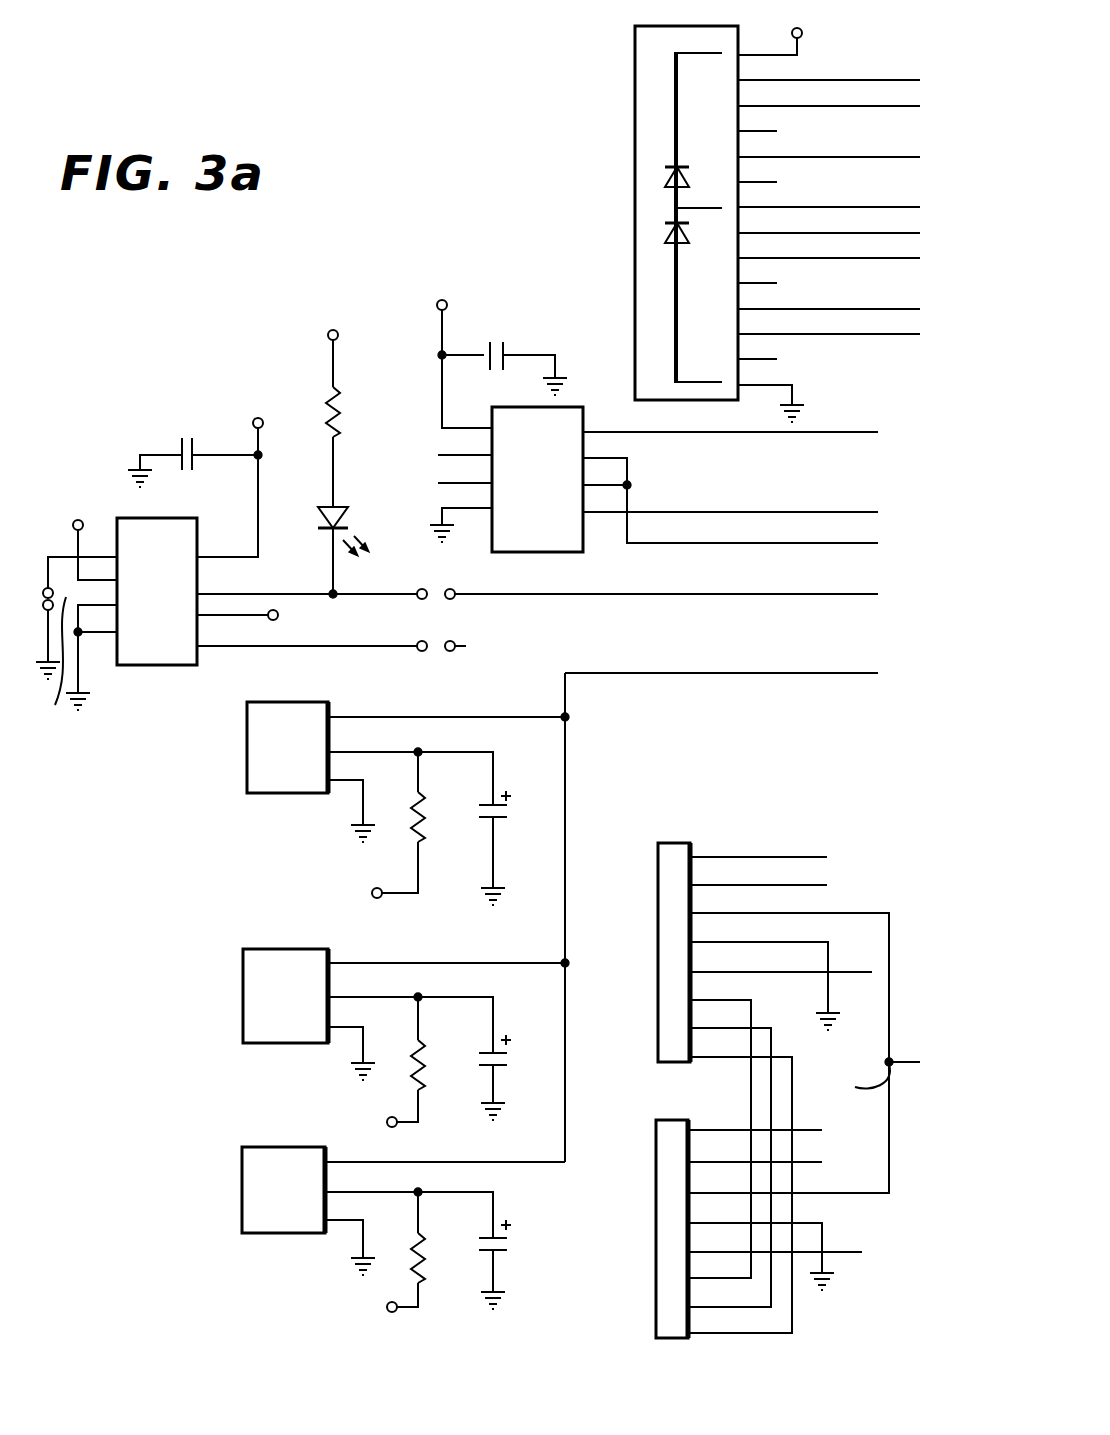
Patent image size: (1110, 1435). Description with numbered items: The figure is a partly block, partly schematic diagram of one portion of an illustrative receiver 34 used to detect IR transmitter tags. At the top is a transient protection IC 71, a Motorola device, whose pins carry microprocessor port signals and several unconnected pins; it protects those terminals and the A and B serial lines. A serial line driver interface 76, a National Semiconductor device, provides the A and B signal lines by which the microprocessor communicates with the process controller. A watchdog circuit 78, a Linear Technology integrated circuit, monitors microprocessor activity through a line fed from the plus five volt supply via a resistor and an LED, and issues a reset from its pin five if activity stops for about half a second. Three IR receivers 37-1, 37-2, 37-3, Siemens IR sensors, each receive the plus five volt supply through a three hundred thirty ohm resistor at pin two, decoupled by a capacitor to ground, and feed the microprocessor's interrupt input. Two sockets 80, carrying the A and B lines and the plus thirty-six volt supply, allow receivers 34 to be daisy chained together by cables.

The receiver 34 is at (362, 118).
The IC 71 is at (616, 164).
The RS-485 interface 76 is at (568, 405).
The watchdog circuit 78 is at (163, 660).
The IR receiver 37-1 is at (237, 770).
The IR receiver 37-2 is at (255, 1010).
The IR receiver 37-3 is at (255, 1188).
The socket 80 is at (693, 823).